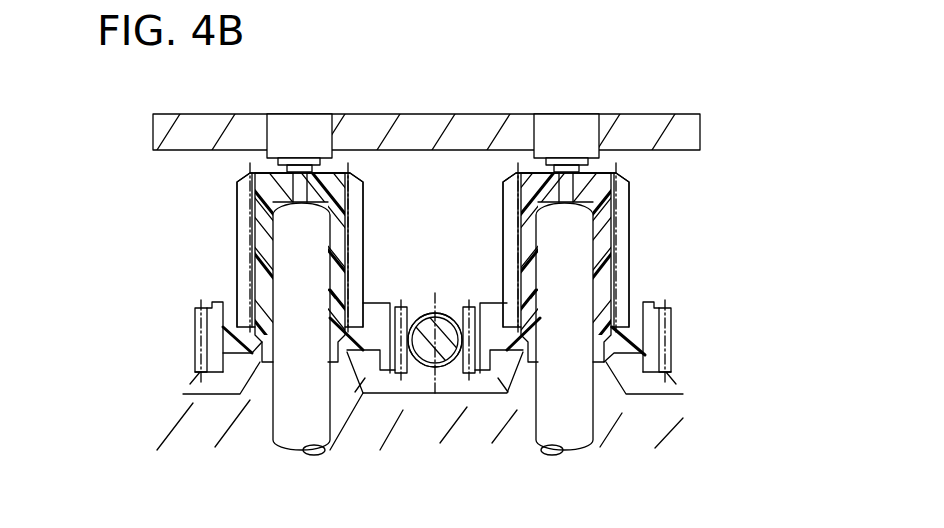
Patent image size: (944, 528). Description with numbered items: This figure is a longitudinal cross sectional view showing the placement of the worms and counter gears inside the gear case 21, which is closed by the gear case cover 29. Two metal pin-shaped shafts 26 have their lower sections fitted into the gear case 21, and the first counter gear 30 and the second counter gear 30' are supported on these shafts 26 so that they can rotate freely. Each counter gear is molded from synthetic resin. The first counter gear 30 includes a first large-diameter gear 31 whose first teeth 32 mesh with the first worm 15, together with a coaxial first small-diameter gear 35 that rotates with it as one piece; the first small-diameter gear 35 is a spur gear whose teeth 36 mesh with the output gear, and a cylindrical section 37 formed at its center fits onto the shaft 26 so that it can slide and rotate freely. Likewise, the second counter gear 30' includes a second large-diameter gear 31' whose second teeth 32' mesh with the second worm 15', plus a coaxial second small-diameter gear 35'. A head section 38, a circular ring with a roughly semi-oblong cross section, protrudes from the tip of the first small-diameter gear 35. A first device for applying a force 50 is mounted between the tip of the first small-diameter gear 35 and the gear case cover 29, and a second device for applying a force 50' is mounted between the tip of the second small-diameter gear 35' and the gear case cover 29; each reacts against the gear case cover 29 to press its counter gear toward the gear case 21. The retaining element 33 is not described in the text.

The first worm 15 is at (435, 390).
The second worm 15' is at (466, 394).
The gear case 21 is at (190, 423).
The shaft 26 is at (285, 428).
The gear case cover 29 is at (425, 108).
The first counter gear 30 is at (251, 250).
The second counter gear 30' is at (626, 250).
The first large-diameter gear 31 is at (168, 341).
The second large-diameter gear 31' is at (700, 341).
The first teeth 32 is at (198, 371).
The second teeth 32' is at (669, 375).
The retaining ring 33 is at (212, 303).
The first small-diameter gear 35 is at (265, 247).
The second small-diameter gear 35' is at (605, 247).
The teeth 36 is at (237, 268).
The cylindrical section 37 is at (338, 240).
The head section 38 is at (252, 167).
The first device for applying a force 50 is at (317, 112).
The second device for applying a force 50' is at (544, 112).